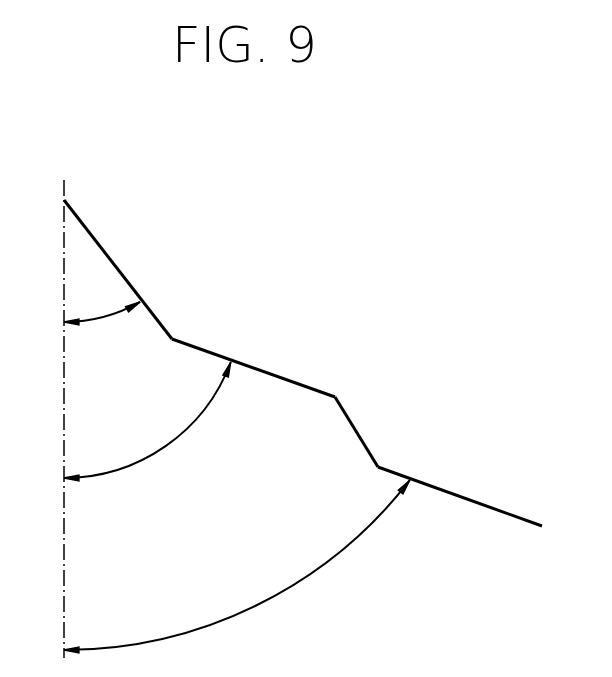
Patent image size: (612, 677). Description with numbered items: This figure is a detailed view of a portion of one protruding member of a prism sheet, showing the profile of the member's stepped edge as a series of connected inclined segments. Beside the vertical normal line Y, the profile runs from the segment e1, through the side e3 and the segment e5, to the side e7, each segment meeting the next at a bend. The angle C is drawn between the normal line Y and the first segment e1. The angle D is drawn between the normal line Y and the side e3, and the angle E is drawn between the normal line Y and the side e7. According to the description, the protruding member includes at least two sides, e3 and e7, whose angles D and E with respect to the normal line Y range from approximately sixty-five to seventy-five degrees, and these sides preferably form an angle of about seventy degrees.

The first edge segment e1 is at (118, 268).
The side e3 is at (255, 366).
The fifth edge segment e5 is at (360, 432).
The side e7 is at (468, 497).
The angle C is at (102, 305).
The angle D is at (147, 421).
The angle E is at (237, 566).
The normal line Y is at (59, 395).